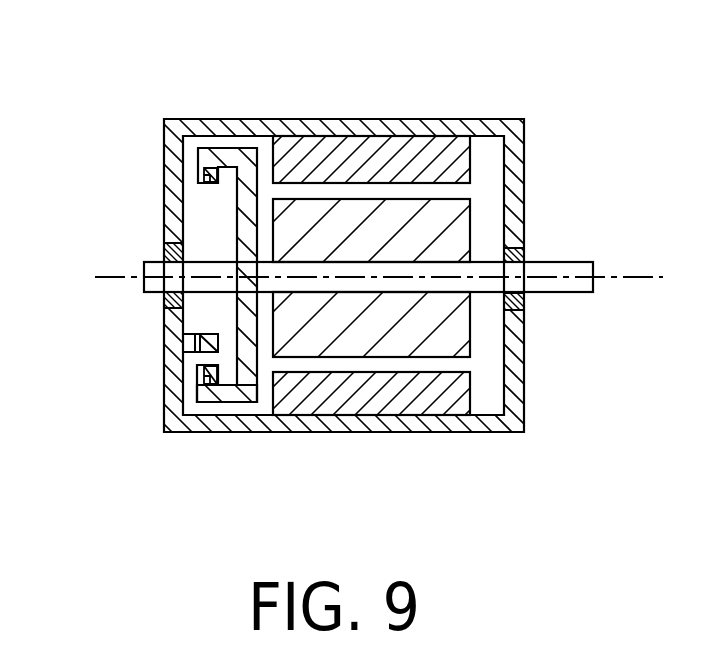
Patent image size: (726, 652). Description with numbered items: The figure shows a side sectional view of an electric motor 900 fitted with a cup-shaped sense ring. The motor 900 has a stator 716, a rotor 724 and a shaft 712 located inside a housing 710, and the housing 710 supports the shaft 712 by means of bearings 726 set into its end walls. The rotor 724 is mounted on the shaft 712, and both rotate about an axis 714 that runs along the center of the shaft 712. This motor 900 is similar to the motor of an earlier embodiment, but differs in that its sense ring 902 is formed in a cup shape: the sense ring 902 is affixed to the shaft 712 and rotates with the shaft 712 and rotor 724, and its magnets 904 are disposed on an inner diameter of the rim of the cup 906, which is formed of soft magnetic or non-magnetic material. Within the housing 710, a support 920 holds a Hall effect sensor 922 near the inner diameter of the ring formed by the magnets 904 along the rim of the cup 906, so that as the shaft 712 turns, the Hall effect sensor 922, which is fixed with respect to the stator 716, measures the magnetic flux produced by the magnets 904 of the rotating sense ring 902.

The motor 900 is at (142, 98).
The housing 710 is at (443, 130).
The shaft 712 is at (545, 272).
The axis 714 is at (635, 282).
The stator 716 is at (343, 152).
The rotor 724 is at (460, 222).
The bearings 726 is at (165, 258).
The sense ring 902 is at (252, 231).
The magnets 904 is at (200, 173).
The cup 906 is at (227, 390).
The support 920 is at (203, 346).
The Hall effect sensor 922 is at (203, 340).